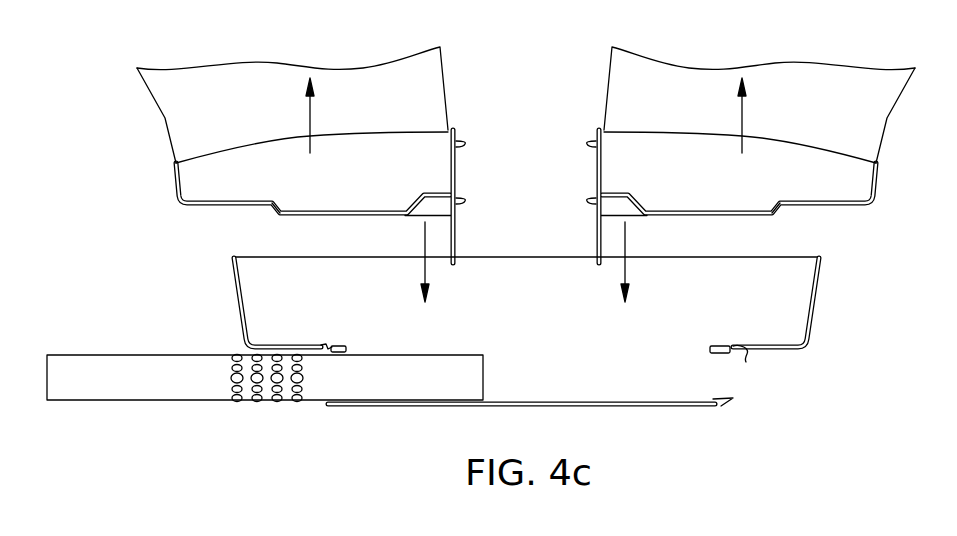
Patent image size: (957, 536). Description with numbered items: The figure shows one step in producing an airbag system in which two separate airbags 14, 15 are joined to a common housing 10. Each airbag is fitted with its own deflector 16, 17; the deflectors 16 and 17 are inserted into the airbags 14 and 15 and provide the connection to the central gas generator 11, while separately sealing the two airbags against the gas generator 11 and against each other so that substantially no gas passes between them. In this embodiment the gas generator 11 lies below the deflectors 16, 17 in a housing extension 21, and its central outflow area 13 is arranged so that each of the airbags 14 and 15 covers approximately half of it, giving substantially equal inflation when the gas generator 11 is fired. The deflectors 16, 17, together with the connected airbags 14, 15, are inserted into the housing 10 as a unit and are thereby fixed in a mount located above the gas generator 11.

The common housing 10 is at (817, 295).
The central gas generator 11 is at (170, 373).
The central outflow area 13 is at (267, 383).
The airbag 14 is at (252, 87).
The airbag 15 is at (820, 87).
The deflector 16 is at (275, 205).
The deflector 17 is at (777, 207).
The housing extension 21 is at (730, 410).